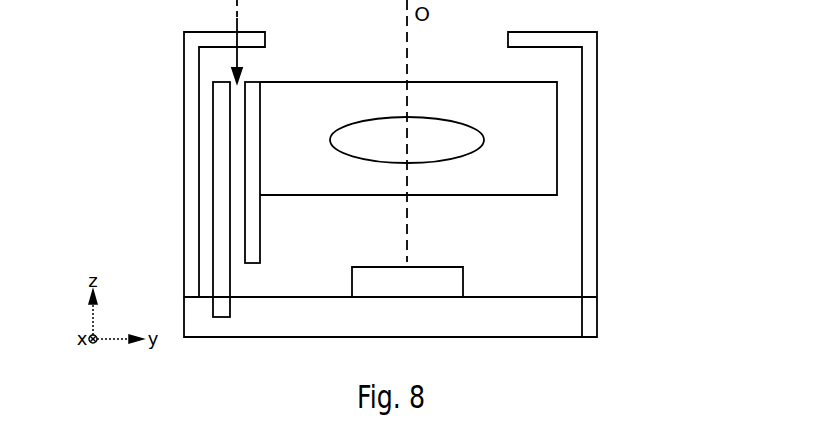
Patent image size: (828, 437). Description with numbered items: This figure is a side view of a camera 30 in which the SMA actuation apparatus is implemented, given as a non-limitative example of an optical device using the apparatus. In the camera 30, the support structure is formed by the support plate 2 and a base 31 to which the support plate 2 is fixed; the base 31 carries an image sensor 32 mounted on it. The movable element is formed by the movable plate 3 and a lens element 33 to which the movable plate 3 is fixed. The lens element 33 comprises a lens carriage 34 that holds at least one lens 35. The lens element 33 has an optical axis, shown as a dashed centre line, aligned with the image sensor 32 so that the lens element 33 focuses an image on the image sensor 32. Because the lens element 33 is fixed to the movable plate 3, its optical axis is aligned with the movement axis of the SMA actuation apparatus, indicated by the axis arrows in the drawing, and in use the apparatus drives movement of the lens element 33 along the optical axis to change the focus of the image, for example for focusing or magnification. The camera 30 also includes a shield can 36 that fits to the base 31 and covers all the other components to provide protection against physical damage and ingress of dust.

The camera 30 is at (147, 62).
The support plate 2 is at (222, 202).
The movable plate 3 is at (253, 120).
The base 31 is at (292, 315).
The image sensor 32 is at (433, 288).
The lens element 33 is at (543, 97).
The lens carriage 34 is at (543, 137).
The lens 35 is at (445, 143).
The shield can 36 is at (587, 58).